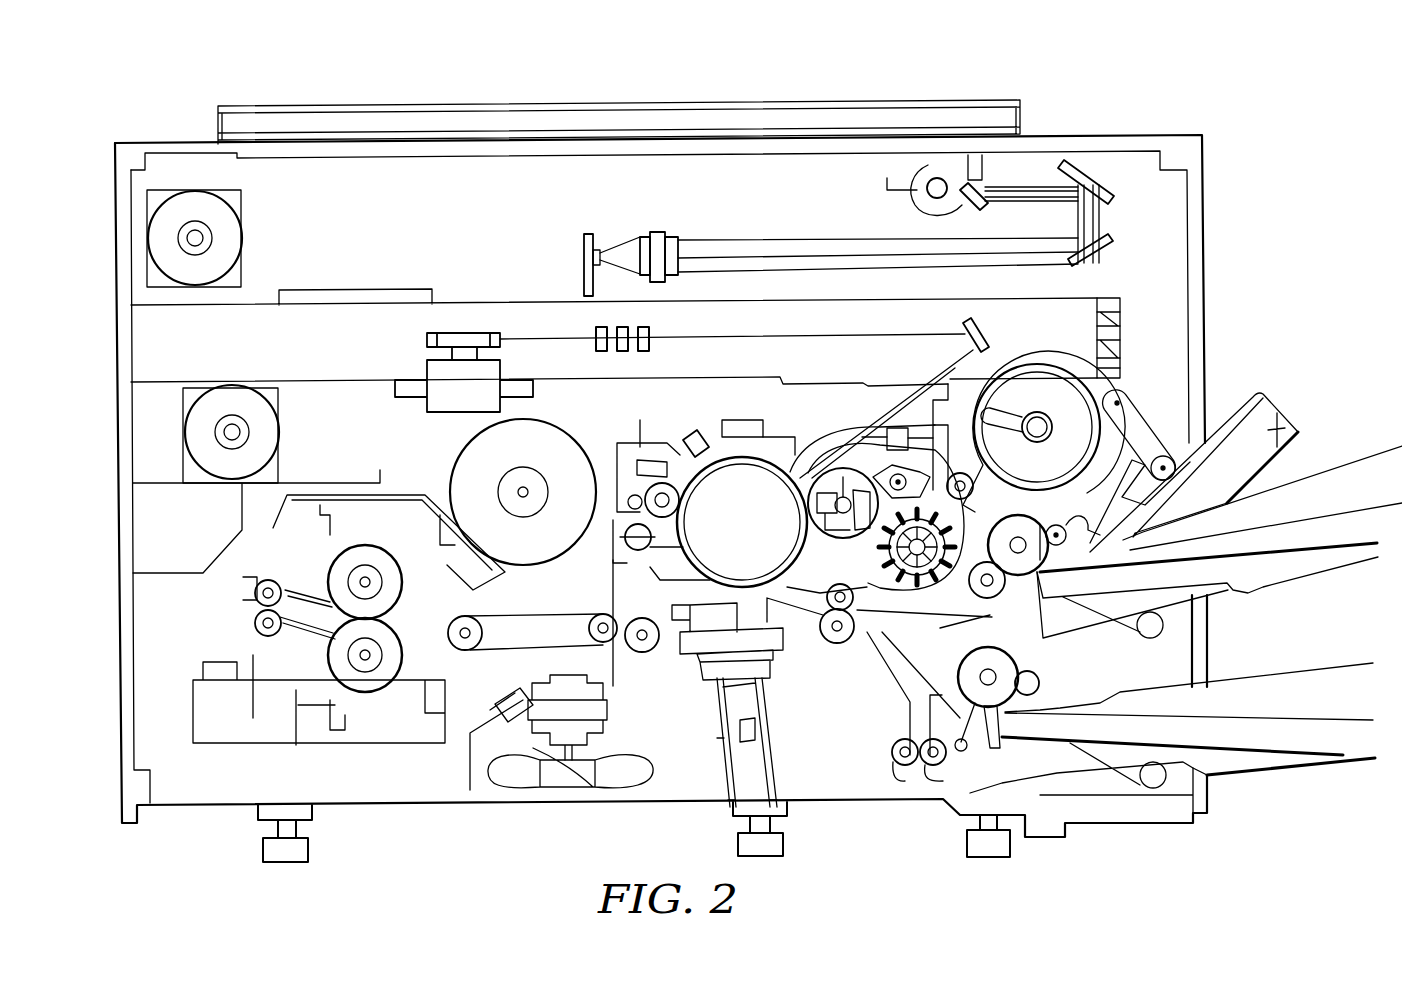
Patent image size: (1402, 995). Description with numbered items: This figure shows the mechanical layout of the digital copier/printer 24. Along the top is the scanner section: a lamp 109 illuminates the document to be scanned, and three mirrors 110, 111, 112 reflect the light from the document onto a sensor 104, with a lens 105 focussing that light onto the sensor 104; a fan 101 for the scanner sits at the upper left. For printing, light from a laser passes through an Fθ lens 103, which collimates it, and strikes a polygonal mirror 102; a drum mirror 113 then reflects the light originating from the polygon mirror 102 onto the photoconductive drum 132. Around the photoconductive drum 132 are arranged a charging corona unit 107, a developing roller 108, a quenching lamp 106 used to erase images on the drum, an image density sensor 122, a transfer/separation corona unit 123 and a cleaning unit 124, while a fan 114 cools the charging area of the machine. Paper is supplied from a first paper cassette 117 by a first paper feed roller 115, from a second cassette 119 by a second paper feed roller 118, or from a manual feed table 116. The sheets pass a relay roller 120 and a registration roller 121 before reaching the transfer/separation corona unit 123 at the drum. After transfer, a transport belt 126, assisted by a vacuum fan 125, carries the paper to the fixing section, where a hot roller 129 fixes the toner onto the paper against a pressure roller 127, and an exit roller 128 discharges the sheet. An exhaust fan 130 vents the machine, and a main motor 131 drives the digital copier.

The digital copier/printer 24 is at (1302, 118).
The fan for the scanner 101 is at (152, 242).
The polygonal mirror 102 is at (462, 336).
The Fθ lens 103 is at (590, 330).
The sensor 104 is at (583, 258).
The lens 105 is at (672, 233).
The quenching lamp 106 is at (712, 470).
The charging corona unit 107 is at (745, 420).
The developing roller 108 is at (823, 485).
The lamp 109 is at (932, 196).
The mirror 110 is at (984, 203).
The mirror 111 is at (1112, 198).
The mirror 112 is at (1112, 248).
The drum mirror 113 is at (992, 331).
The fan 114 is at (1118, 312).
The first paper feed roller 115 is at (1040, 543).
The manual feed table 116 is at (1283, 425).
The first paper cassette 117 is at (1333, 540).
The second paper feed roller 118 is at (1036, 676).
The second cassette 119 is at (1313, 743).
The relay roller 120 is at (890, 752).
The registration roller 121 is at (838, 643).
The image density sensor 122 is at (790, 556).
The transfer/separation corona unit 123 is at (687, 660).
The cleaning unit 124 is at (625, 548).
The vacuum fan 125 is at (555, 790).
The transport belt 126 is at (503, 653).
The pressure roller 127 is at (370, 668).
The exit roller 128 is at (255, 627).
The hot roller 129 is at (340, 575).
The exhaust fan 130 is at (275, 428).
The main motor 131 is at (470, 463).
The photoconductive drum 132 is at (717, 483).